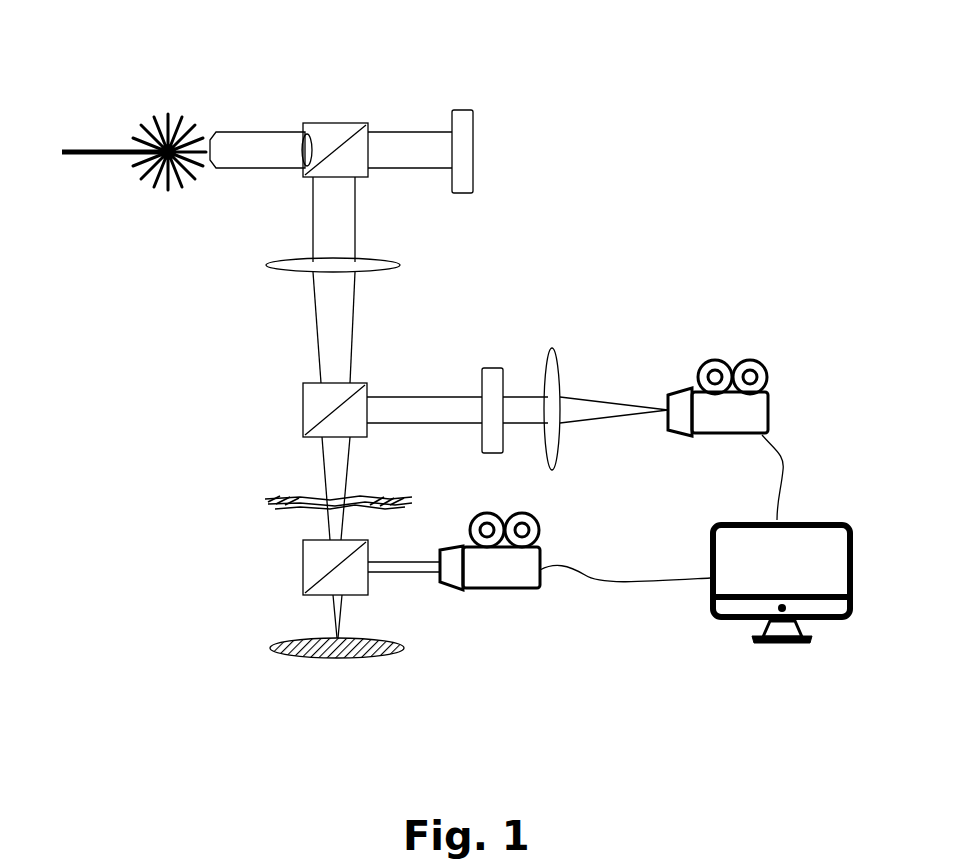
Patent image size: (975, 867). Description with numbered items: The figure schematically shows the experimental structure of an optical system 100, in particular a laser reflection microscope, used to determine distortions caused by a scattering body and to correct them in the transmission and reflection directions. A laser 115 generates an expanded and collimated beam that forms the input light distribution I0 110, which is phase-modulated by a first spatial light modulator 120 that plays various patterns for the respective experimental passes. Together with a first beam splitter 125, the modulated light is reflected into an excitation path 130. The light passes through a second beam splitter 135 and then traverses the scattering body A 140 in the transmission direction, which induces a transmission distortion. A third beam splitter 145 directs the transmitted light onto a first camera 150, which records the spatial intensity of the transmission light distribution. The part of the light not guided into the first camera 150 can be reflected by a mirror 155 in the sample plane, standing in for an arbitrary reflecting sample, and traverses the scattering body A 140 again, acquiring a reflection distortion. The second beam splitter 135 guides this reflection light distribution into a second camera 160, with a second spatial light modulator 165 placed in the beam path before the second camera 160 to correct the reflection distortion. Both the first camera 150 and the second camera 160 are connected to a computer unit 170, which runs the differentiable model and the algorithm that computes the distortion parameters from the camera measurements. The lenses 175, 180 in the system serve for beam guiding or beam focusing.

The optical system 100 is at (660, 203).
The input light distribution I0 110 is at (245, 145).
The laser 115 is at (93, 165).
The first spatial light modulator 120 is at (465, 120).
The first beam splitter 125 is at (345, 118).
The excitation path 130 is at (342, 222).
The second beam splitter 135 is at (303, 403).
The scattering body A 140 is at (267, 503).
The third beam splitter 145 is at (312, 570).
The first camera 150 is at (508, 578).
The mirror 155 is at (400, 658).
The second camera 160 is at (757, 417).
The second spatial light modulator 165 is at (507, 368).
The computer unit 170 is at (790, 547).
The lens 175 is at (400, 265).
The lens 180 is at (555, 393).